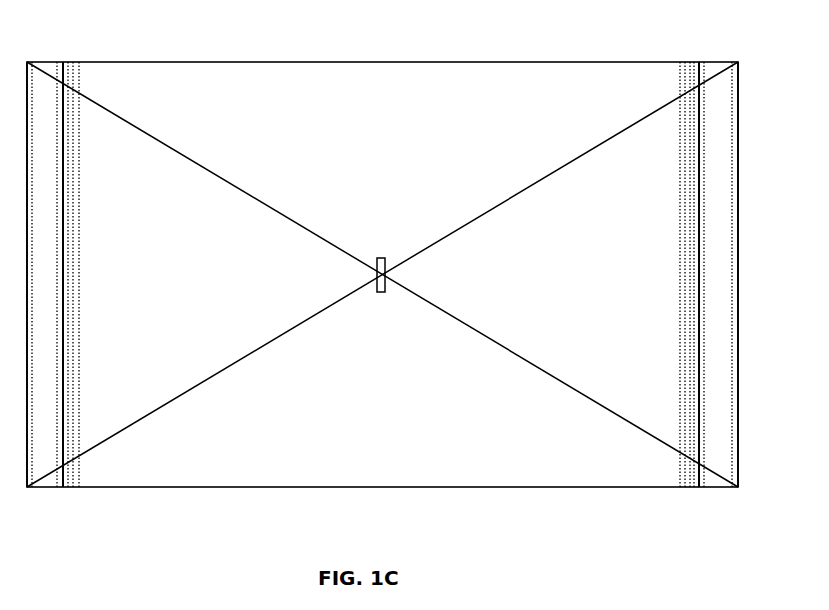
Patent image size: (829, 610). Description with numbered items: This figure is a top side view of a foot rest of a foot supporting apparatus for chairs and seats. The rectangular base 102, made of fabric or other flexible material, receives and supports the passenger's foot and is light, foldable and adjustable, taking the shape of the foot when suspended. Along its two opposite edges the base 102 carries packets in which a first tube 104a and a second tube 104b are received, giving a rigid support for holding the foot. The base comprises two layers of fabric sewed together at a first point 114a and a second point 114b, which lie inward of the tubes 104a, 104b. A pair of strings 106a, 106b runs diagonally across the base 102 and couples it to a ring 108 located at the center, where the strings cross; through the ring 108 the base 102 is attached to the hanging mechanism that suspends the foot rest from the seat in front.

The base 102 is at (338, 61).
The first tube 104a is at (716, 61).
The second tube 104b is at (43, 61).
The string 106a is at (500, 342).
The string 106b is at (150, 133).
The ring 108 is at (383, 258).
The first point 114a is at (688, 243).
The second point 114b is at (80, 247).